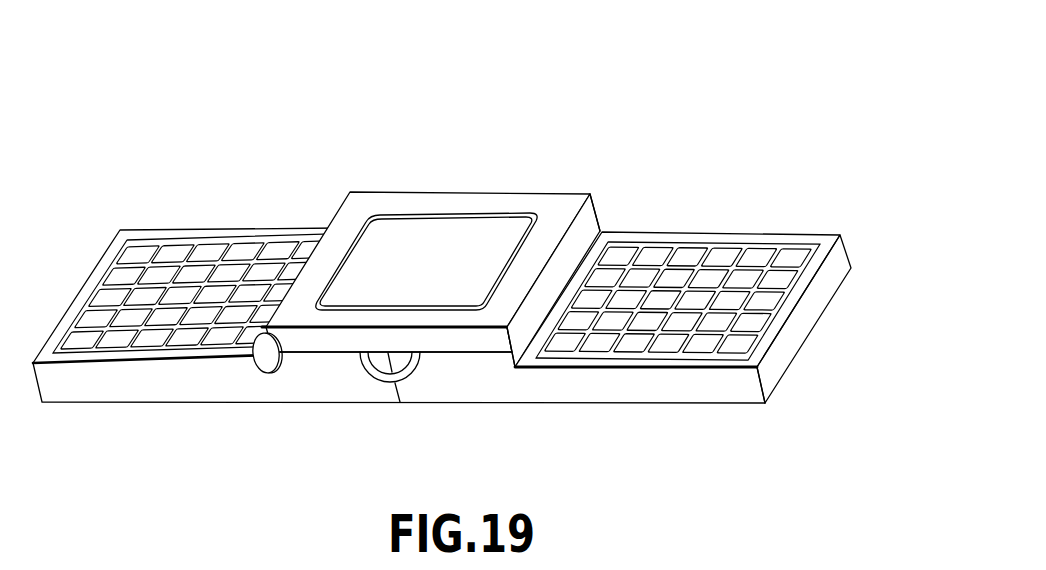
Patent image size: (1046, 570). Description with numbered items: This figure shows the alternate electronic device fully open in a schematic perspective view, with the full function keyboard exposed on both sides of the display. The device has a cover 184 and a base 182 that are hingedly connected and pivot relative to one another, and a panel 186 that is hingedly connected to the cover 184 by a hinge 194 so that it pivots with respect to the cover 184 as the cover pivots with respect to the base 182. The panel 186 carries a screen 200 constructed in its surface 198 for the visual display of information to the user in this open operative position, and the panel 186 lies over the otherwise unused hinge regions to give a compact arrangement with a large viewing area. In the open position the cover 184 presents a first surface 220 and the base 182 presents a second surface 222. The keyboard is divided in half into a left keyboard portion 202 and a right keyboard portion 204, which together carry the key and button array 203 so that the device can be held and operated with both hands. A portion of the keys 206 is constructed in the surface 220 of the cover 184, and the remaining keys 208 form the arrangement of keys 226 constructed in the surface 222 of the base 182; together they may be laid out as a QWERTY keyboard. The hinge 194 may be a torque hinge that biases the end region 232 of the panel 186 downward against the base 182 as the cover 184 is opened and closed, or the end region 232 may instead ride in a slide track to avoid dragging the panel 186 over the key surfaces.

The base 182 is at (837, 263).
The cover 184 is at (82, 402).
The panel 186 is at (508, 195).
The hinge 194 is at (270, 365).
The surface 198 is at (562, 207).
The screen 200 is at (395, 228).
The left keyboard portion 202 is at (168, 208).
The key and button array 203 is at (547, 78).
The right keyboard portion 204 is at (753, 128).
The keys 206 is at (112, 300).
The keys 208 is at (752, 320).
The first surface 220 is at (242, 230).
The second surface 222 is at (768, 253).
The keys 226 is at (632, 343).
The end region 232 is at (598, 202).